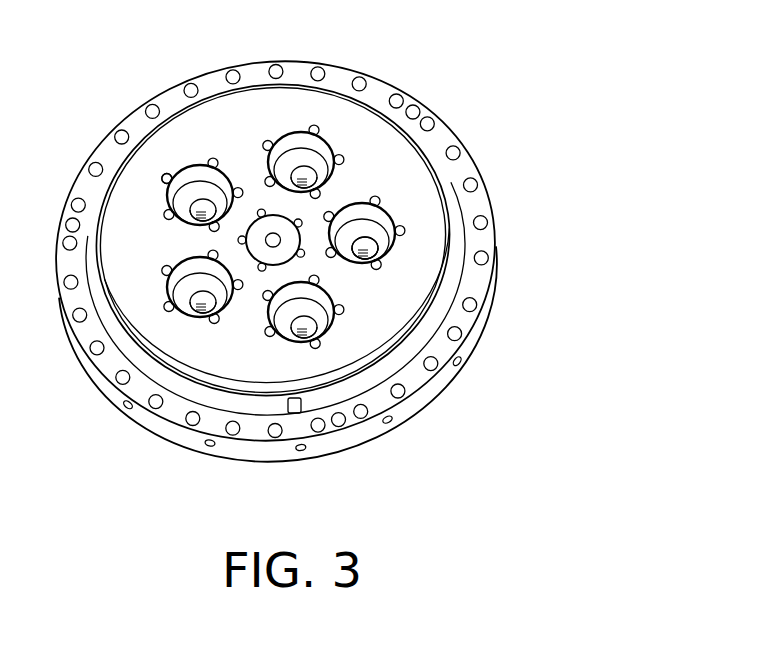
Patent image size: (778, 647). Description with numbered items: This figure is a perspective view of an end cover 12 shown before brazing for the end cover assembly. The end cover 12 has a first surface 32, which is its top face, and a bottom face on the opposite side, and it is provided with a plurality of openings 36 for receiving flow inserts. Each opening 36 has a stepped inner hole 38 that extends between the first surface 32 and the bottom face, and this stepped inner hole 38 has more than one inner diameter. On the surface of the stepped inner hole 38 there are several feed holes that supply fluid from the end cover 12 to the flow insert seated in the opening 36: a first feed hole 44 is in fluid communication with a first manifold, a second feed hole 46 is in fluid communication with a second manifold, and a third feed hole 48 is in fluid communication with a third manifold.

The end cover 12 is at (410, 65).
The first surface 32 is at (392, 153).
The opening 36 is at (436, 234).
The stepped inner hole 38 is at (388, 242).
The first feed hole 44 is at (166, 202).
The second feed hole 46 is at (136, 155).
The third feed hole 48 is at (197, 313).